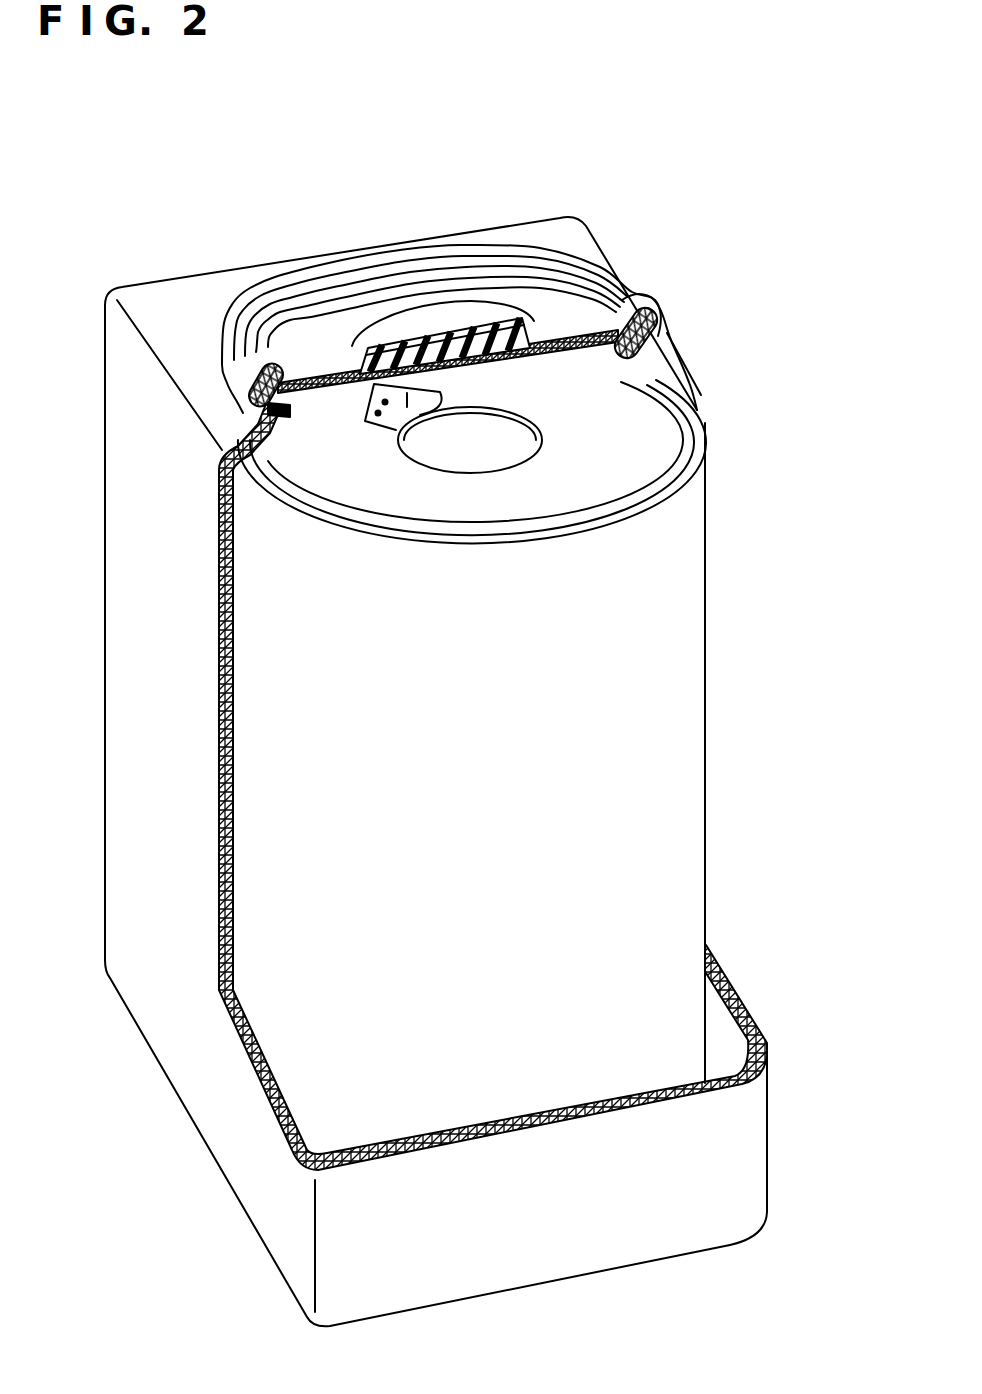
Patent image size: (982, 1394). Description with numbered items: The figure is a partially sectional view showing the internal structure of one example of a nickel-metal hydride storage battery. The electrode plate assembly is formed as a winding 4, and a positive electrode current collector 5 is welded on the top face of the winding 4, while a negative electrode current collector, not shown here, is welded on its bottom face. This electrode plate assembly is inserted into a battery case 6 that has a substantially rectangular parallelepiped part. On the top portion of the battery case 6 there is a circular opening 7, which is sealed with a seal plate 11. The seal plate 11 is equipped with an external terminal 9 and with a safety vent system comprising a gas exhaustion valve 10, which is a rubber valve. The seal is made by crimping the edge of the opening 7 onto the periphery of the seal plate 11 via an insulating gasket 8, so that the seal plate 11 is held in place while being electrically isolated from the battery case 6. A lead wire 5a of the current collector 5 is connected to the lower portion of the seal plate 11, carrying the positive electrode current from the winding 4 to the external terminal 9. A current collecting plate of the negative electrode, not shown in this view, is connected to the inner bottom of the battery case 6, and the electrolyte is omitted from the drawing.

The winding 4 is at (653, 672).
The positive electrode current collector 5 is at (610, 468).
The lead wire 5a is at (396, 352).
The battery case 6 is at (755, 1154).
The circular opening 7 is at (250, 343).
The insulating gasket 8 is at (660, 336).
The external terminal 9 is at (437, 317).
The gas exhaustion valve 10 is at (520, 323).
The seal plate 11 is at (312, 347).